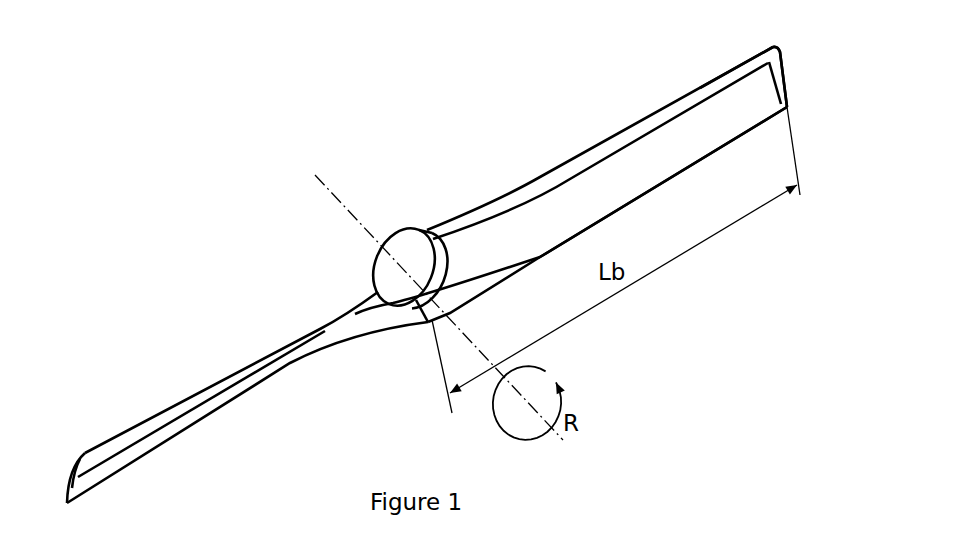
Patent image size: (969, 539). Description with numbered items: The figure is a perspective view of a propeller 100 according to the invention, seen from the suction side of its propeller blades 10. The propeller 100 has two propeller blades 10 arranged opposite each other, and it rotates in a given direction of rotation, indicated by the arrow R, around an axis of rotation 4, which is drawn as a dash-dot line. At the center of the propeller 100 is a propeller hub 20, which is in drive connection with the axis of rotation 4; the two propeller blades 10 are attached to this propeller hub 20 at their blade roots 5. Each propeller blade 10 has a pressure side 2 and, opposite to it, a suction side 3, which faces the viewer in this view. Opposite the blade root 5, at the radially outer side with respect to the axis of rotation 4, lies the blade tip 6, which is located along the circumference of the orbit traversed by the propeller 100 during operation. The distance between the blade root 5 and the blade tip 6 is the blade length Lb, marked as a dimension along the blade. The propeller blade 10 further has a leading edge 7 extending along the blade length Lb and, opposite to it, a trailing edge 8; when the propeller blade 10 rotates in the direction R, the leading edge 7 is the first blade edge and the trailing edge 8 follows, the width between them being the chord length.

The propeller 100 is at (265, 92).
The propeller blade 10 is at (550, 100).
The propeller hub 20 is at (395, 282).
The pressure side 2 is at (734, 145).
The suction side 3 is at (678, 128).
The axis of rotation 4 is at (348, 212).
The blade root 5 is at (458, 252).
The blade tip 6 is at (780, 60).
The leading edge 7 is at (737, 66).
The trailing edge 8 is at (558, 245).